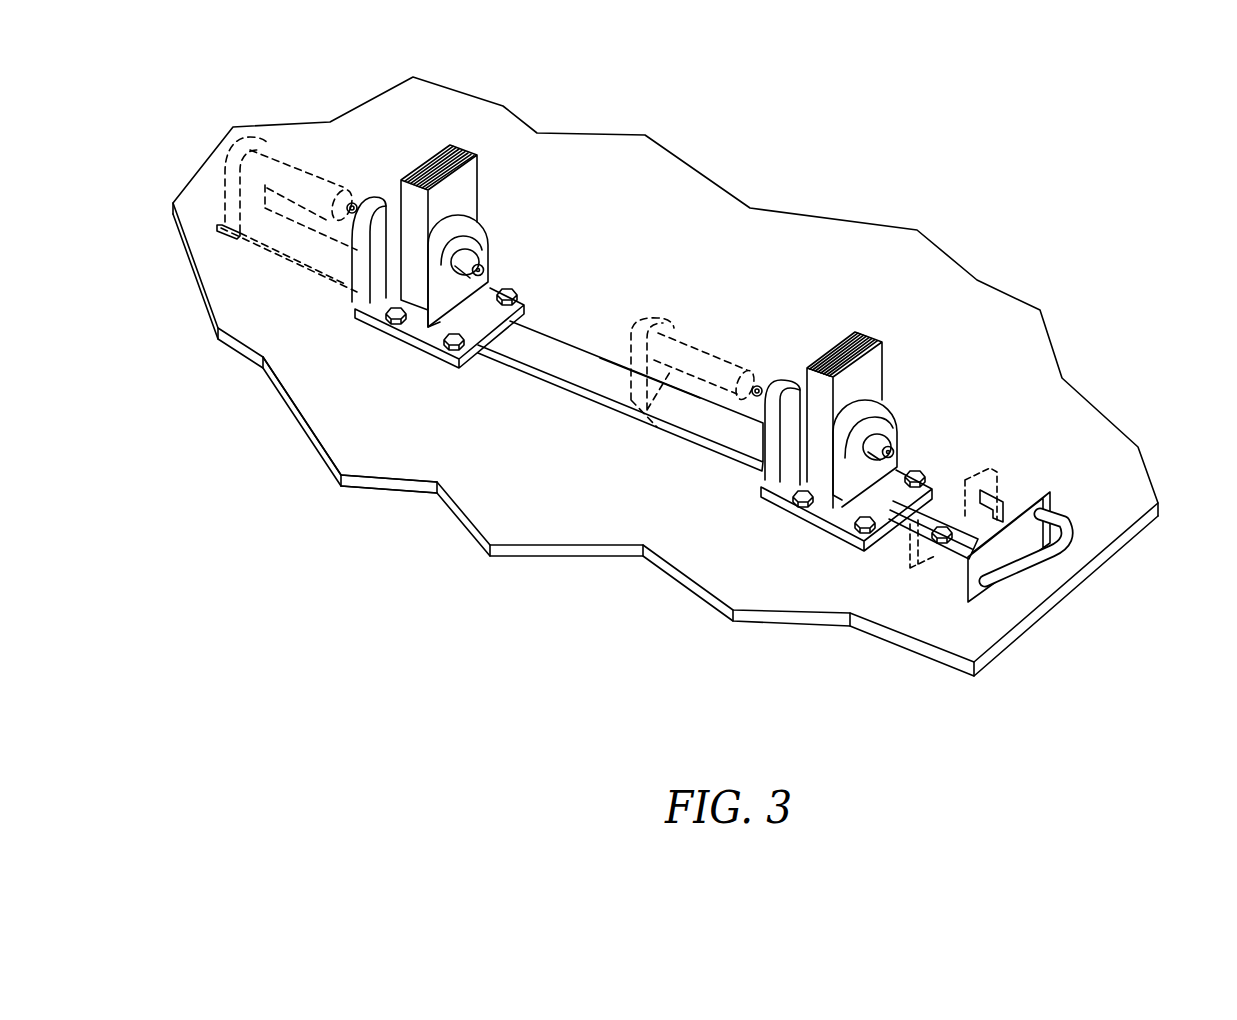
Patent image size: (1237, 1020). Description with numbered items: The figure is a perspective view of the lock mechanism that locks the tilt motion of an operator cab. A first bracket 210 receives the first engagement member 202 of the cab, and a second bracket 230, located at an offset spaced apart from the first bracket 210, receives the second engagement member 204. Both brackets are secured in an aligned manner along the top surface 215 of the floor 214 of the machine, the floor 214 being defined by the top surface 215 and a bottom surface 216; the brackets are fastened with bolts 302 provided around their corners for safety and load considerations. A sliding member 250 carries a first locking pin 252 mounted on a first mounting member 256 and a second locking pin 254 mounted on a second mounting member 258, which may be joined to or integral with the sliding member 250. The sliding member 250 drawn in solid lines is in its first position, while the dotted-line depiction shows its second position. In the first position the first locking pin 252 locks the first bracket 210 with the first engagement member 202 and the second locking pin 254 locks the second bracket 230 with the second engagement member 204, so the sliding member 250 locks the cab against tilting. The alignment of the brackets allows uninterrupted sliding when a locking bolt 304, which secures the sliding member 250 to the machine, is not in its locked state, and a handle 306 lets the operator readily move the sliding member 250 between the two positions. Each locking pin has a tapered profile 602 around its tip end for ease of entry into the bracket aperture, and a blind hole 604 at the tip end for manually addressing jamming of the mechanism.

The first engagement member 202 is at (884, 366).
The second engagement member 204 is at (477, 177).
The first bracket 210 is at (836, 568).
The floor 214 is at (366, 484).
The top surface 215 is at (377, 443).
The bottom surface 216 is at (410, 491).
The second bracket 230 is at (512, 255).
The sliding member 250 is at (590, 332).
The first locking pin 252 is at (898, 426).
The second locking pin 254 is at (311, 166).
The first mounting member 256 is at (778, 381).
The second mounting member 258 is at (373, 203).
The bolts 302 is at (358, 307).
The locking bolt 304 is at (942, 526).
The handle 306 is at (1060, 524).
The tapered profile 602 is at (468, 271).
The blind hole 604 is at (488, 273).